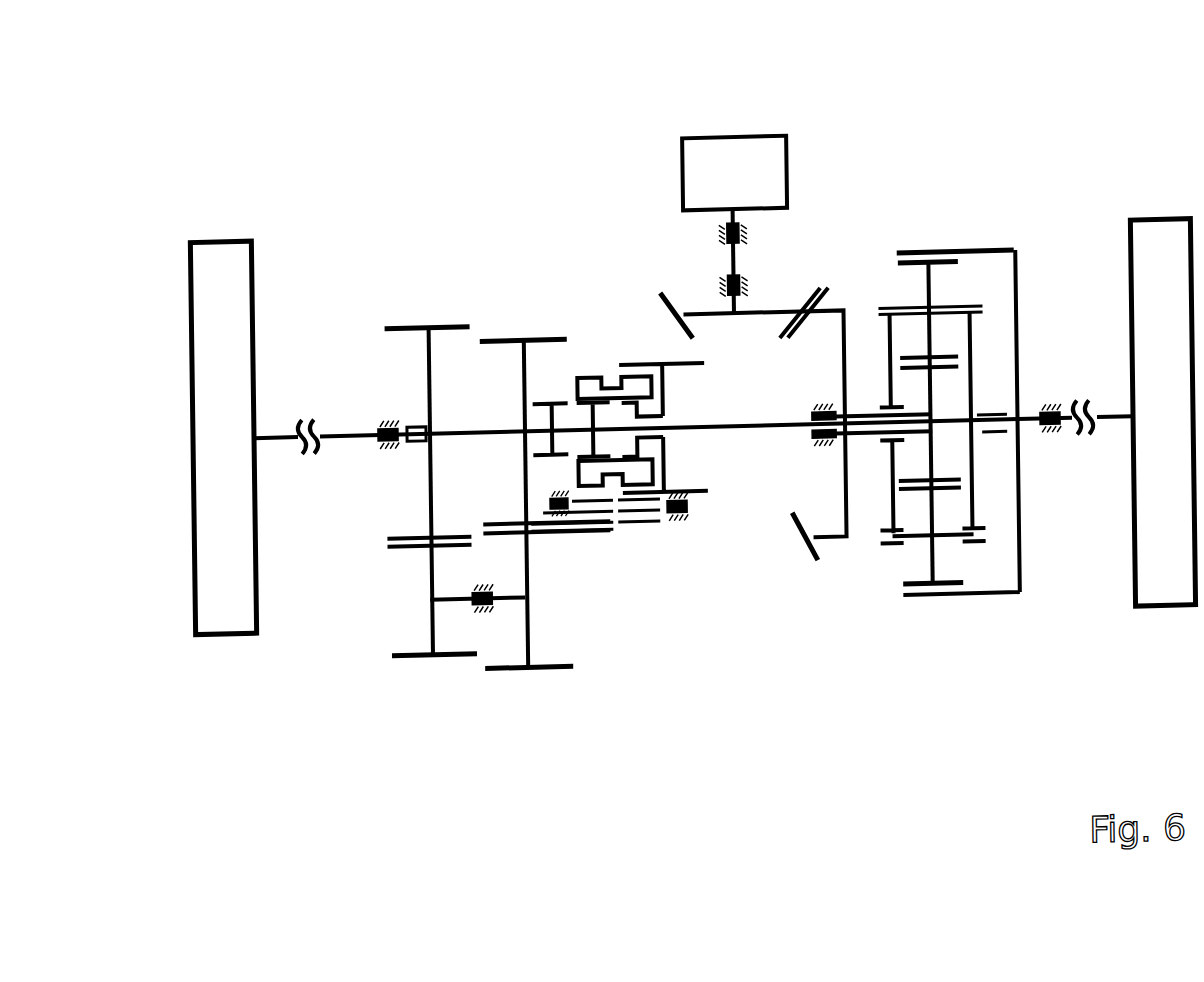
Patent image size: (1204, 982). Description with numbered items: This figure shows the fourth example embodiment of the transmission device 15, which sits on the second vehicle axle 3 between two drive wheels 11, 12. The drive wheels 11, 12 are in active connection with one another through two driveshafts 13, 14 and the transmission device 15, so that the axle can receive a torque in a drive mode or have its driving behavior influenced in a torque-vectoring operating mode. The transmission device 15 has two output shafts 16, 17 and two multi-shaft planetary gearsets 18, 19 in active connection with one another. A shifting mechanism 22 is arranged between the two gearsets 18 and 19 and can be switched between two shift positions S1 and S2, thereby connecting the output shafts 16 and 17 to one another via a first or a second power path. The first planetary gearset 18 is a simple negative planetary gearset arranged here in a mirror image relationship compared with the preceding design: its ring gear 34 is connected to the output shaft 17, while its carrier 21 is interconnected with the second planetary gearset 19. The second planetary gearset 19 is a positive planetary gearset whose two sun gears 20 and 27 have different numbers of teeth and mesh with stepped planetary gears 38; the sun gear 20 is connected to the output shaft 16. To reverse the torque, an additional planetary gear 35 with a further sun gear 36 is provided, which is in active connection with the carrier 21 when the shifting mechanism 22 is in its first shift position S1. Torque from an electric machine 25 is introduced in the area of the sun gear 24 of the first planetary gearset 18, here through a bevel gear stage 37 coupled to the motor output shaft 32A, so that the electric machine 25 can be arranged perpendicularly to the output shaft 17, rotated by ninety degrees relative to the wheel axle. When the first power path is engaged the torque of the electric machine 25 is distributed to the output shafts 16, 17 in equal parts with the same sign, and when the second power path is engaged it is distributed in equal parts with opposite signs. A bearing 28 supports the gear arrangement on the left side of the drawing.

The second vehicle axle 3 is at (808, 672).
The drive wheel 11 is at (212, 280).
The drive wheel 12 is at (1165, 255).
The driveshaft 13 is at (283, 423).
The driveshaft 14 is at (1117, 423).
The transmission device 15 is at (511, 110).
The output shaft 16 is at (353, 424).
The output shaft 17 is at (1033, 381).
The first planetary gearset 18 is at (945, 255).
The second planetary gearset 19 is at (423, 318).
The sun gear 20 is at (427, 471).
The carrier 21 is at (892, 517).
The shifting mechanism 22 is at (599, 372).
The sun gear 24 is at (868, 409).
The electric machine 25 is at (739, 137).
The sun gear 27 is at (529, 476).
The bearing 28 is at (482, 610).
The motor output shaft 32A is at (730, 263).
The ring gear 34 is at (1019, 523).
The additional planetary gear 35 is at (627, 525).
The further sun gear 36 is at (702, 500).
The bevel gear stage 37 is at (810, 284).
The stepped planetary gears 38 is at (505, 670).
The first shift position S1 is at (641, 358).
The second shift position S2 is at (548, 398).